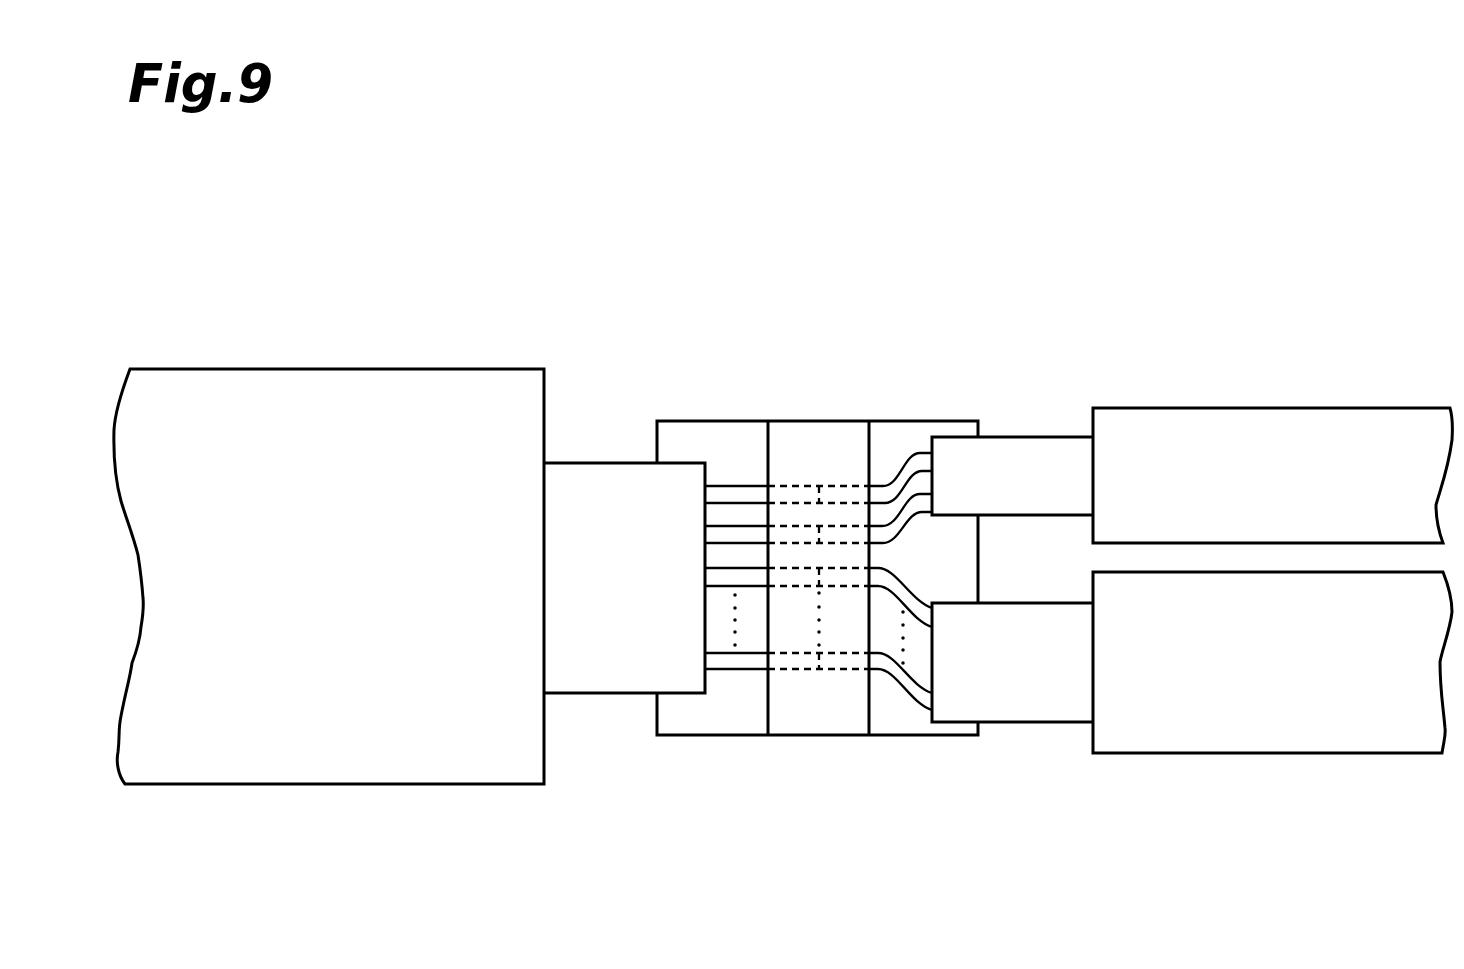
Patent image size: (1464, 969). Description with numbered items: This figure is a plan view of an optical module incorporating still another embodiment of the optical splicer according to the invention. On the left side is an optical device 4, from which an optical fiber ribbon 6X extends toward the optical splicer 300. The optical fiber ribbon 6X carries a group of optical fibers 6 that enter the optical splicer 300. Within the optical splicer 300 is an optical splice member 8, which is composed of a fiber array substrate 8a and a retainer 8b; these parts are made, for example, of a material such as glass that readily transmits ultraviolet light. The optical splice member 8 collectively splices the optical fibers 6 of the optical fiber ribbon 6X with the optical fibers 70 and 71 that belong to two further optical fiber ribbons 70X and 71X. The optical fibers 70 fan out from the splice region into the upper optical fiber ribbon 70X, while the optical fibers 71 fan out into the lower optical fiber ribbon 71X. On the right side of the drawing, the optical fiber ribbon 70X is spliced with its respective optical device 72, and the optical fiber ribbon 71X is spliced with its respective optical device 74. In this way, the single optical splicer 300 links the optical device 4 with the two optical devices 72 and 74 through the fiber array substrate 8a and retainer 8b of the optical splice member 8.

The optical device 4 is at (352, 390).
The optical splicer 300 is at (748, 308).
The optical fibers 6 is at (737, 667).
The optical fiber ribbon 6X is at (580, 697).
The optical splice member 8 is at (818, 588).
The fiber array substrate 8a is at (745, 720).
The retainer 8b is at (808, 437).
The optical fibers 70 is at (903, 470).
The optical fibers 71 is at (903, 683).
The optical fiber ribbon 70X is at (1022, 452).
The optical fiber ribbon 71X is at (1038, 672).
The optical device 72 is at (1262, 425).
The optical device 74 is at (1260, 738).